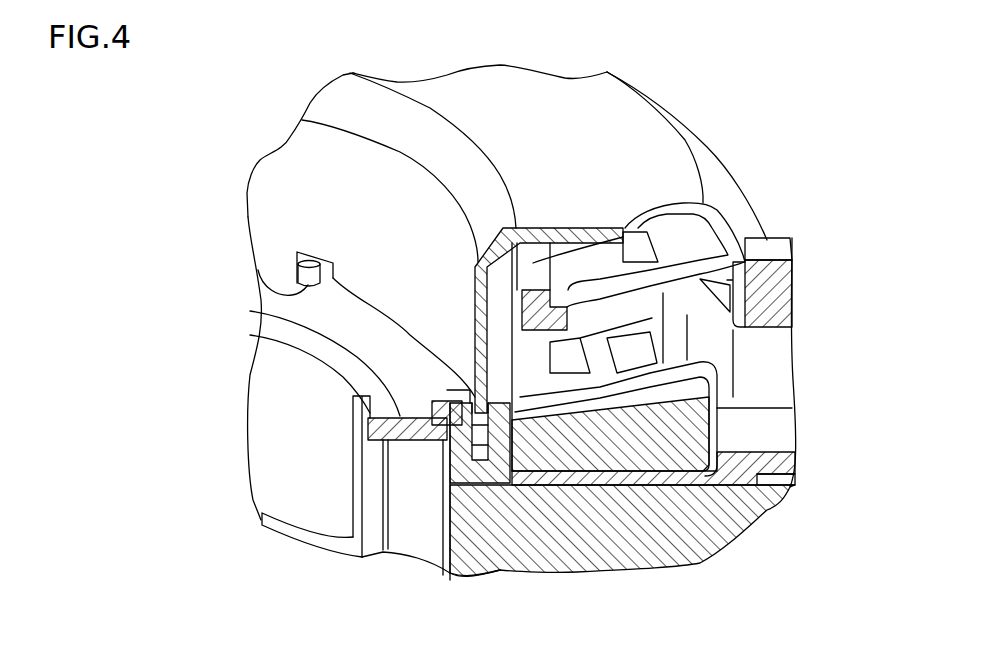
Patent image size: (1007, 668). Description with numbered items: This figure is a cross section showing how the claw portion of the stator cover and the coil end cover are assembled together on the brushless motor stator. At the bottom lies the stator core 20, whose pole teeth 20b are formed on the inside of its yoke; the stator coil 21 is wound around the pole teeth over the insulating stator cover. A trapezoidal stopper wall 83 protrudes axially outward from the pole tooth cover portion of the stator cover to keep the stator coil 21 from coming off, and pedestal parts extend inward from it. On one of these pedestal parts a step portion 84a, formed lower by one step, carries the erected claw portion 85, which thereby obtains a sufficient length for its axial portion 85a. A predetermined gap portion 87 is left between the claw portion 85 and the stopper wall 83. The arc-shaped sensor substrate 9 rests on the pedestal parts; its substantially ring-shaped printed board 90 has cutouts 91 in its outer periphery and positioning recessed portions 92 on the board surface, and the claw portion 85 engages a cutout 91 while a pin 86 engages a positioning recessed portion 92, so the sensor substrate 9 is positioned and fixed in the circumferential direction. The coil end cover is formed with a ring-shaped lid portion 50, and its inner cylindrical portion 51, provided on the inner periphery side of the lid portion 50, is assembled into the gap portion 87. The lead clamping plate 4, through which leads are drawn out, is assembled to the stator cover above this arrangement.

The ring-shaped lid portion 50 is at (553, 107).
The inner cylindrical portion 51 is at (276, 230).
The lead clamping plate 4 is at (587, 227).
The pin 86 is at (296, 269).
The printed board 90 is at (275, 305).
The positioning recessed portion 92 is at (355, 300).
The sensor substrate 9 is at (350, 338).
The claw portion 85 is at (368, 421).
The gap portion 87 is at (447, 437).
The cutout 91 is at (470, 427).
The axial portion 85a is at (443, 513).
The step portion 84a is at (466, 462).
The stopper wall 83 is at (500, 440).
The stator coil 21 is at (677, 443).
The stator core 20 is at (747, 517).
The pole teeth 20b is at (631, 550).